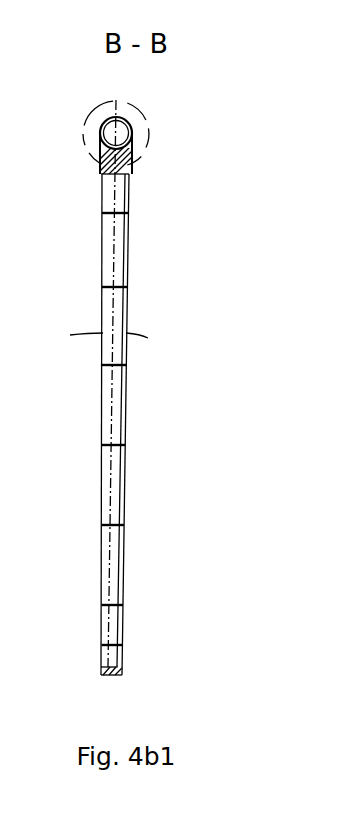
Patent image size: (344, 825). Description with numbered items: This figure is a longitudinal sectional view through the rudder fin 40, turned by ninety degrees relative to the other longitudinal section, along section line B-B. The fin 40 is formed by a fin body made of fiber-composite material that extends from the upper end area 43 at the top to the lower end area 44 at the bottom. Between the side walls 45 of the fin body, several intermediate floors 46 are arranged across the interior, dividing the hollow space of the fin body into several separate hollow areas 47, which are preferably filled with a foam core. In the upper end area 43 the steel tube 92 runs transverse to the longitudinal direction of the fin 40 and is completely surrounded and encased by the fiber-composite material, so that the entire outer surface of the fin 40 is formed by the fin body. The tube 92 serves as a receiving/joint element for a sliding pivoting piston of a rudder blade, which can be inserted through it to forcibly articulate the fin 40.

The fin 40 is at (122, 397).
The upper end area 43 is at (123, 110).
The lower end area 44 is at (107, 681).
The side walls 45 is at (153, 333).
The intermediate floors 46 is at (123, 287).
The hollow areas 47 is at (120, 240).
The steel tube 92 is at (120, 134).